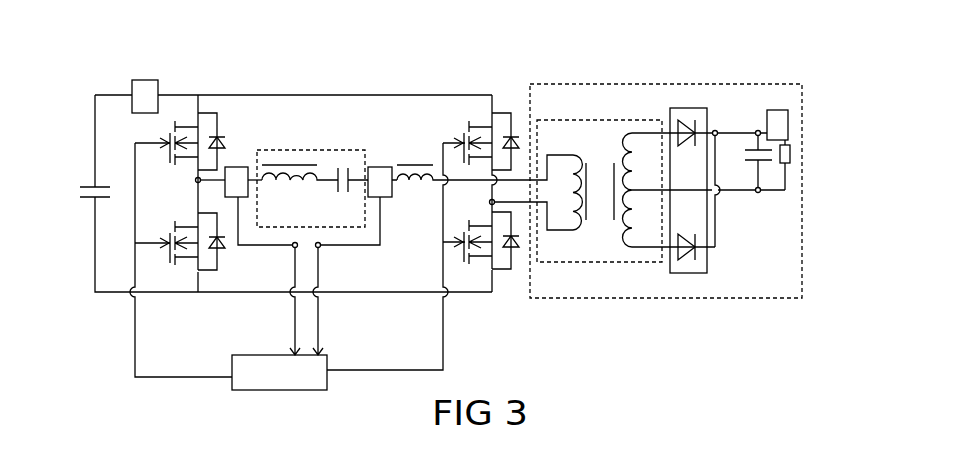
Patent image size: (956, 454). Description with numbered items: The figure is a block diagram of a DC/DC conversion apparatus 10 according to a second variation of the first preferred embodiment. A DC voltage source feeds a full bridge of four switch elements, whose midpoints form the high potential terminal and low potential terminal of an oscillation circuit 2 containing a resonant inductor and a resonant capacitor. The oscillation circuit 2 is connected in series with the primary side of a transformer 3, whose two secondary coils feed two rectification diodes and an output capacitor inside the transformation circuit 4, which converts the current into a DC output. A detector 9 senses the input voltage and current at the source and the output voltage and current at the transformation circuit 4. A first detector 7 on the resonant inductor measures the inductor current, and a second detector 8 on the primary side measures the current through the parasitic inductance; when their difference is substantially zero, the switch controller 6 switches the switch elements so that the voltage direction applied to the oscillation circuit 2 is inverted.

The oscillation circuit 2 is at (345, 150).
The transformer 3 is at (607, 120).
The transformation circuit 4 is at (700, 84).
The switch controller 6 is at (279, 372).
The first detector 7 is at (236, 182).
The second detector 8 is at (380, 182).
The detector 9 is at (460, 110).
The DC/DC conversion apparatus 10 is at (433, 202).